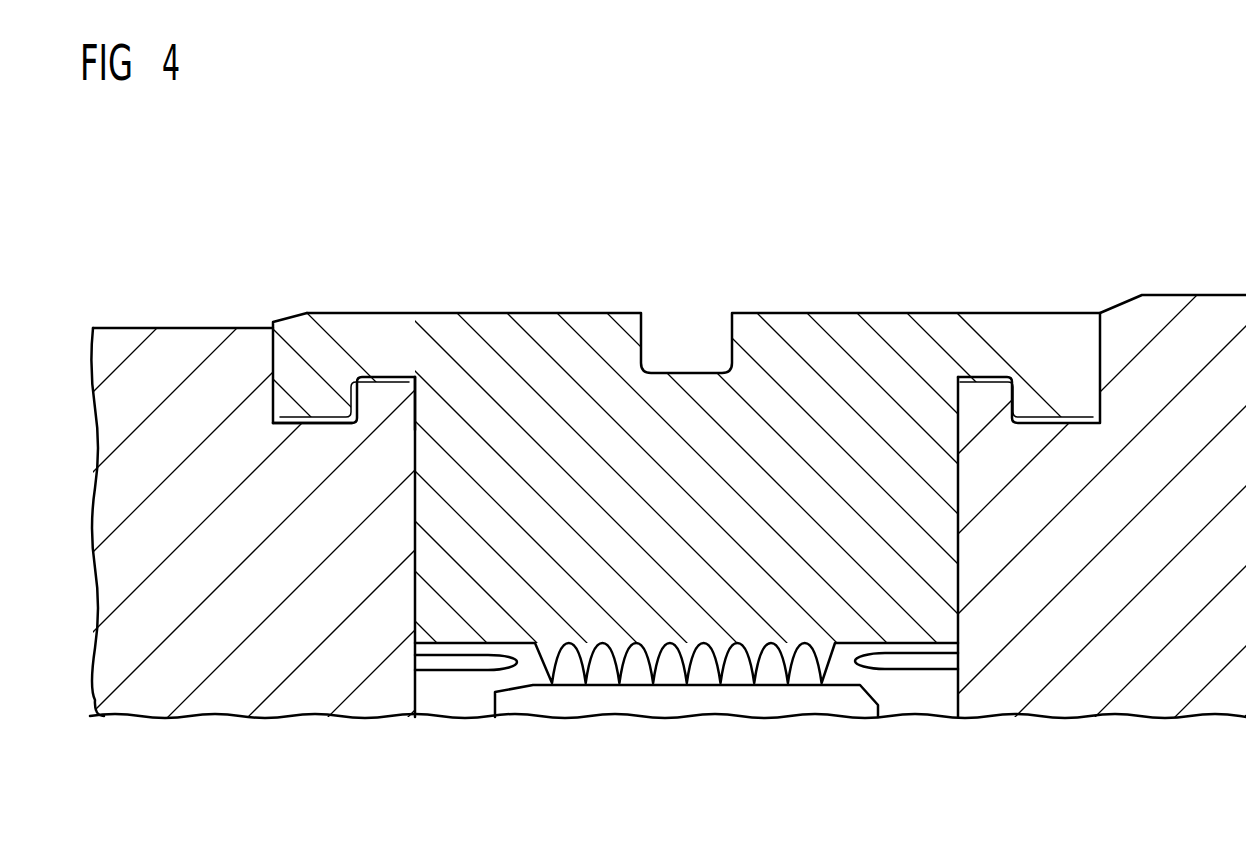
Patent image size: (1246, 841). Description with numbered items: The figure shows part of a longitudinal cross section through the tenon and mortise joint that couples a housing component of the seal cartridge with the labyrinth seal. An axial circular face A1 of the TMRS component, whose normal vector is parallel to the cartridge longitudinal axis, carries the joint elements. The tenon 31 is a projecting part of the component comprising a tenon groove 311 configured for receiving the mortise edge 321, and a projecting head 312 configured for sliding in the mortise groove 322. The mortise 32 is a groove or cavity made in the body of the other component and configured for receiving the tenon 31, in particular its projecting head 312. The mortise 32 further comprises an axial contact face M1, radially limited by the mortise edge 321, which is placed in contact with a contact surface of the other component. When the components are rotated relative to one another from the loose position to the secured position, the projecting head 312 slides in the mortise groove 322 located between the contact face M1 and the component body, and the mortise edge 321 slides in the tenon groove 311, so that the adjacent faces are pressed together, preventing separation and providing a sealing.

The tenon 31 is at (1072, 365).
The mortise 32 is at (985, 395).
The tenon groove 311 is at (392, 425).
The projecting head 312 is at (310, 392).
The mortise edge 321 is at (385, 397).
The mortise groove 322 is at (312, 432).
The axial contact face M1 is at (417, 567).
The axial circular face A1 is at (960, 588).